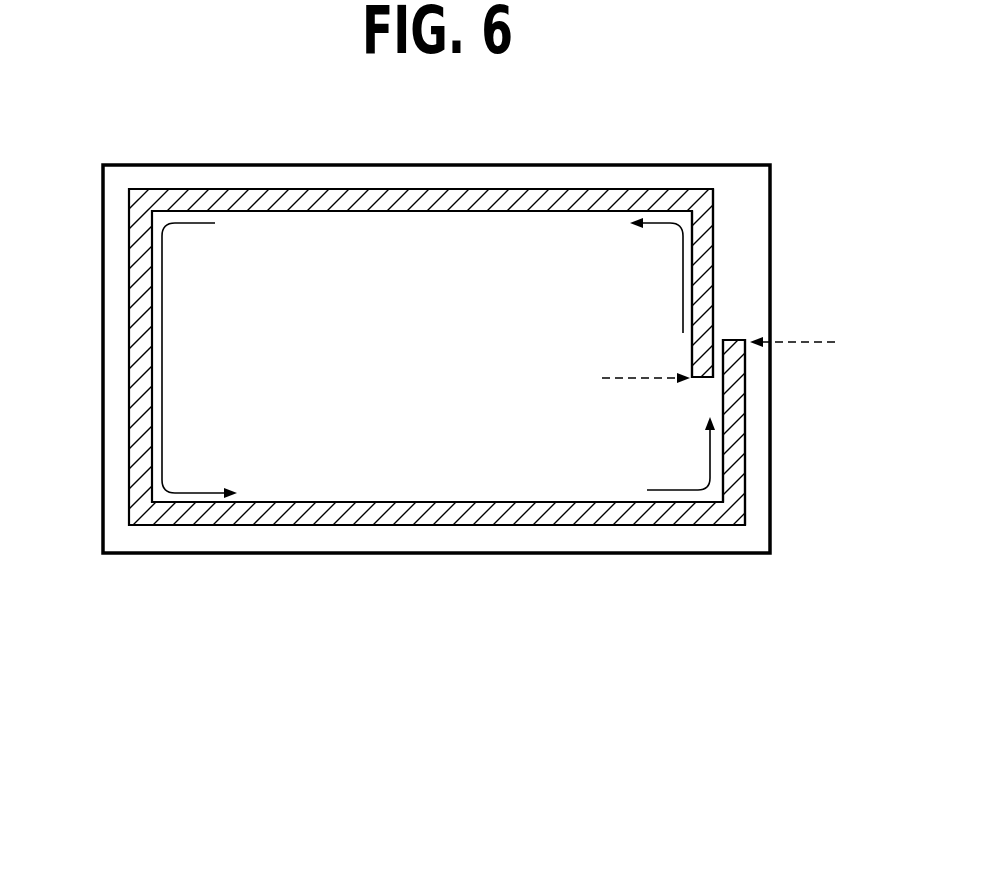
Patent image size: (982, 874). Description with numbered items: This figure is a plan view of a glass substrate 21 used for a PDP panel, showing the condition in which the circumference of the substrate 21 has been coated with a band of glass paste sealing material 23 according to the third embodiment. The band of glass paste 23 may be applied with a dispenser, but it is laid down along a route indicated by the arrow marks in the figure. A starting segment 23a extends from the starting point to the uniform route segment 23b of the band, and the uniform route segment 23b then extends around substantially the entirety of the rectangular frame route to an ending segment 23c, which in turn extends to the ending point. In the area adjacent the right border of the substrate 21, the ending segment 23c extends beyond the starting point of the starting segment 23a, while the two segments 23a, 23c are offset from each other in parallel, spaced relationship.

The glass substrate 21 is at (642, 178).
The glass paste sealing material 23 is at (358, 512).
The starting segment 23a is at (690, 362).
The uniform route segment 23b is at (530, 203).
The ending segment 23c is at (747, 360).